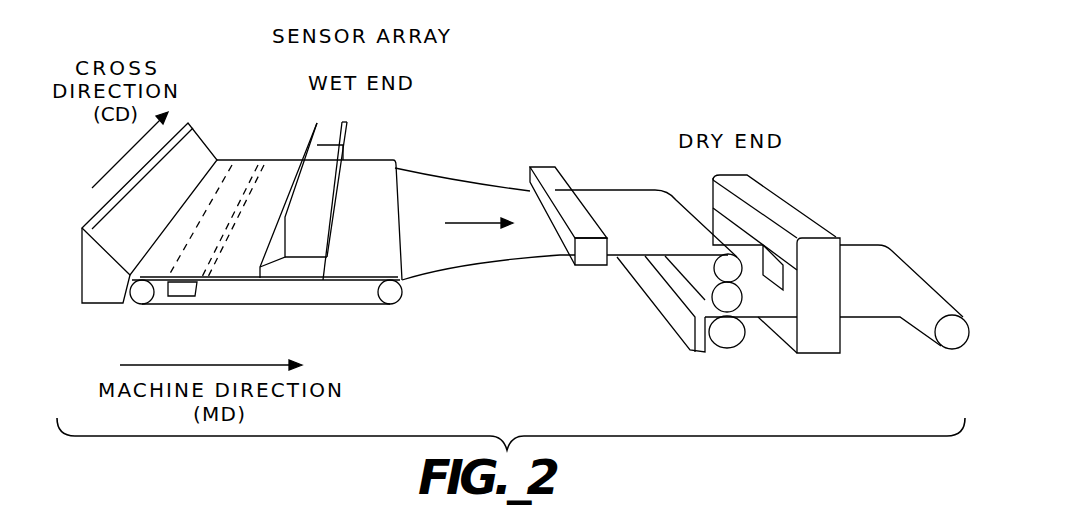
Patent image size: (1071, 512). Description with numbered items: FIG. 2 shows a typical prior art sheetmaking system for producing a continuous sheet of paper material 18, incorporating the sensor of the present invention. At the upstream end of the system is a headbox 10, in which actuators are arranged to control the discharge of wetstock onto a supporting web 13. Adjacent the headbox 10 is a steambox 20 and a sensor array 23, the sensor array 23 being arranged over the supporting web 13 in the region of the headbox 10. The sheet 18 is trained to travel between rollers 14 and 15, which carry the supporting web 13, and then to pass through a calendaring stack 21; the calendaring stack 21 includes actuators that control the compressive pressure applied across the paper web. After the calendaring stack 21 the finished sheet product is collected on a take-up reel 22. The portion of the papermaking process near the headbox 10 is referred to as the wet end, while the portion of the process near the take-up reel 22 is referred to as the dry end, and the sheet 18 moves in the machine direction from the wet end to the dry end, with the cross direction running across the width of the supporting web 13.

The headbox 10 is at (92, 300).
The supporting web 13 is at (297, 302).
The roller 14 is at (142, 305).
The roller 15 is at (392, 302).
The sheet of paper material 18 is at (865, 248).
The steambox 20 is at (328, 147).
The calendaring stack 21 is at (725, 356).
The take-up reel 22 is at (948, 343).
The sensor array 23 is at (239, 162).